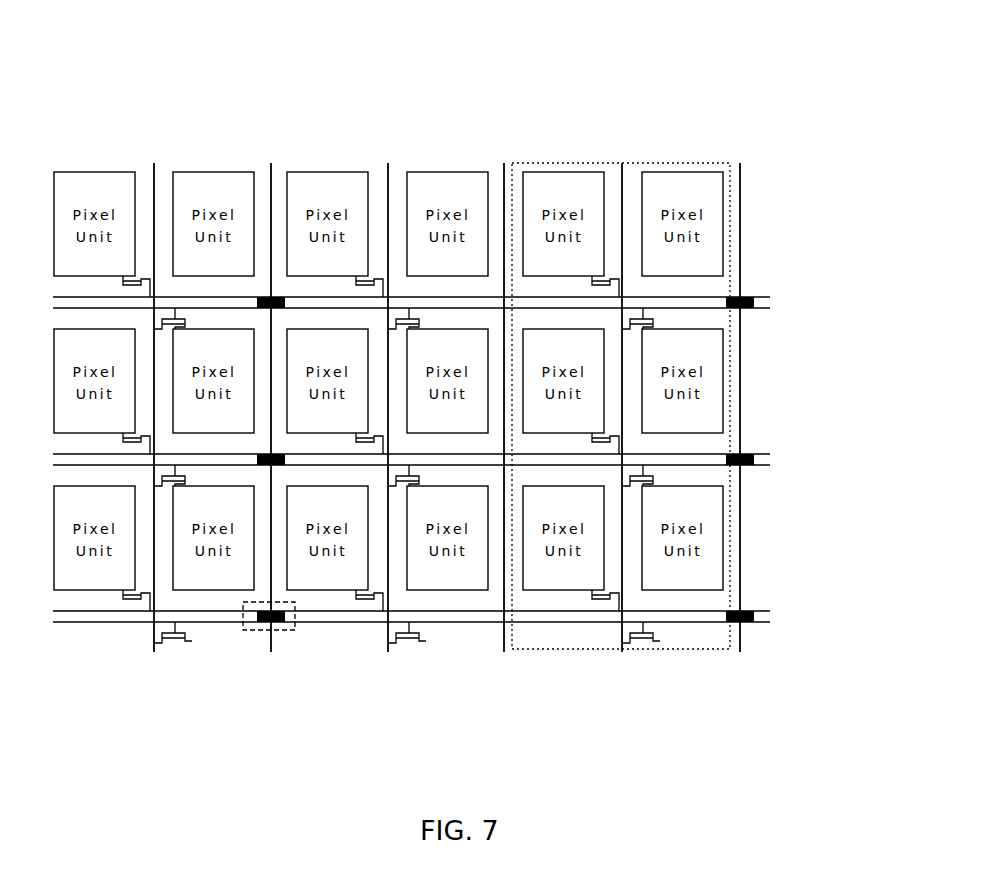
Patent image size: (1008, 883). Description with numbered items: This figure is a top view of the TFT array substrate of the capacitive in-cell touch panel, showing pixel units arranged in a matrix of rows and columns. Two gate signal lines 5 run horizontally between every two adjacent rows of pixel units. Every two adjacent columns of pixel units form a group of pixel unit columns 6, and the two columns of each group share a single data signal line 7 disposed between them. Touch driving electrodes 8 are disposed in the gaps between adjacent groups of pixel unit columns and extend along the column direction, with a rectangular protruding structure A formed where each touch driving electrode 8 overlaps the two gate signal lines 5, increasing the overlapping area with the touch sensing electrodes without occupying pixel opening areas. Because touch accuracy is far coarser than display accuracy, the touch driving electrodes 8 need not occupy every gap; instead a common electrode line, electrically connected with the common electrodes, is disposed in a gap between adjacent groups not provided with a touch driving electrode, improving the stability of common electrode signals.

The gate signal lines 5 is at (833, 289).
The group of pixel unit columns 6 is at (732, 233).
The data signal line 7 is at (160, 136).
The touch driving electrode 8 is at (271, 678).
The protruding structure A is at (243, 630).